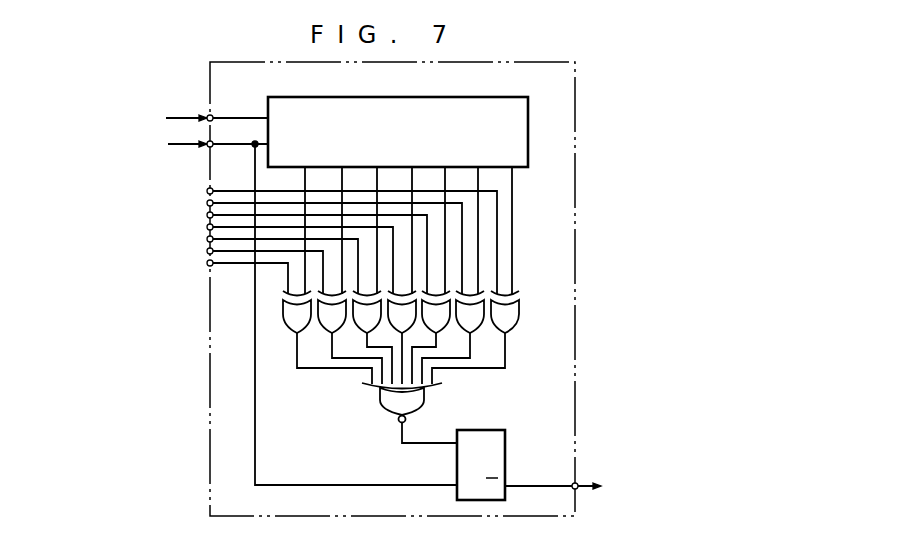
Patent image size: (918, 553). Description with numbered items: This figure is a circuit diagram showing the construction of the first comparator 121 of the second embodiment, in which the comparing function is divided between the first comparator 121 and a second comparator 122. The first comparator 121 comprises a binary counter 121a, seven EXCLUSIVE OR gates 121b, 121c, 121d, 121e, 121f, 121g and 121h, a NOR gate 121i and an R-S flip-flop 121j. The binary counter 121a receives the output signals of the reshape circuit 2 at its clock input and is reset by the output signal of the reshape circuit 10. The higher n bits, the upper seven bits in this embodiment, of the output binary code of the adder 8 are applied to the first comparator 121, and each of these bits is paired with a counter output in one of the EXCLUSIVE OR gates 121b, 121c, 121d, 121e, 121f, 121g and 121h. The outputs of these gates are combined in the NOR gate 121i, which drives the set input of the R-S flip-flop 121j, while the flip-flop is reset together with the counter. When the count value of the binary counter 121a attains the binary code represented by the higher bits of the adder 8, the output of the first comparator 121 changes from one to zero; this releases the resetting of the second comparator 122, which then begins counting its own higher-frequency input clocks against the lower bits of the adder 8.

The reshape circuit 2 is at (209, 117).
The reshape circuit 10 is at (301, 309).
The adder 8 is at (197, 185).
The first comparator 121 is at (575, 176).
The binary counter 121a is at (455, 97).
The EXCLUSIVE OR gate 121b is at (326, 327).
The EXCLUSIVE OR gate 121c is at (302, 343).
The EXCLUSIVE OR gate 121d is at (354, 333).
The EXCLUSIVE OR gate 121e is at (378, 345).
The EXCLUSIVE OR gate 121f is at (441, 328).
The EXCLUSIVE OR gate 121g is at (478, 328).
The EXCLUSIVE OR gate 121h is at (517, 314).
The NOR gate 121i is at (390, 410).
The R-S flip-flop 121j is at (505, 440).
The second comparator 122 is at (572, 486).